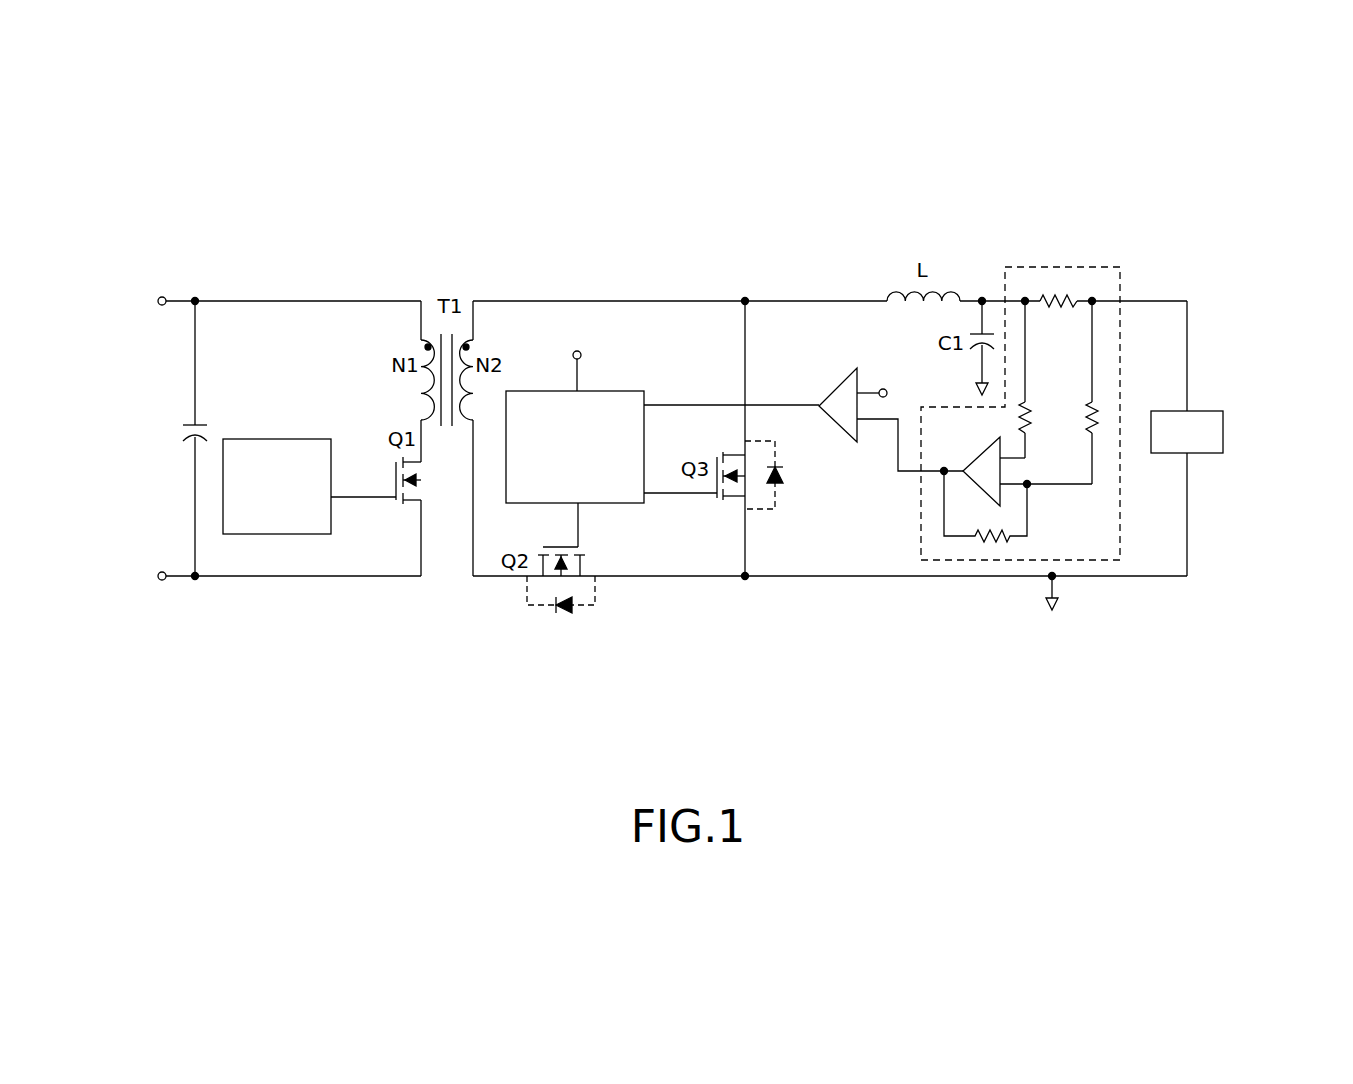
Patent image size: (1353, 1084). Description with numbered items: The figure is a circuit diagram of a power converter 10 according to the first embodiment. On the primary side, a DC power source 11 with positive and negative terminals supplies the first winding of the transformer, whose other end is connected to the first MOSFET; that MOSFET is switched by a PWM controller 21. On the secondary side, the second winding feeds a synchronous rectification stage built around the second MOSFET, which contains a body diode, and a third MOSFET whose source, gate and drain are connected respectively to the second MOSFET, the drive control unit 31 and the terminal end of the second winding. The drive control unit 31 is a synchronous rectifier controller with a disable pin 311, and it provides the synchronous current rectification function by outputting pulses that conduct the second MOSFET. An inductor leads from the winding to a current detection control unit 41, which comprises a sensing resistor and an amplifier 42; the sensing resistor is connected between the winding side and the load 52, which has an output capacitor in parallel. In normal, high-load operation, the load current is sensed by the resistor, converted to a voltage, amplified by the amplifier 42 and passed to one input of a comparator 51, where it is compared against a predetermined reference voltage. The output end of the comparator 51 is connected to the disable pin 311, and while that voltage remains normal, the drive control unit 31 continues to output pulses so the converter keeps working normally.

The power converter 10 is at (250, 708).
The DC power source 11 is at (163, 296).
The PWM controller 21 is at (275, 534).
The drive control unit 31 is at (620, 391).
The disable pin 311 is at (663, 405).
The current detection control unit 41 is at (1068, 267).
The amplifier 42 is at (977, 490).
The comparator 51 is at (838, 425).
The load 52 is at (1202, 408).